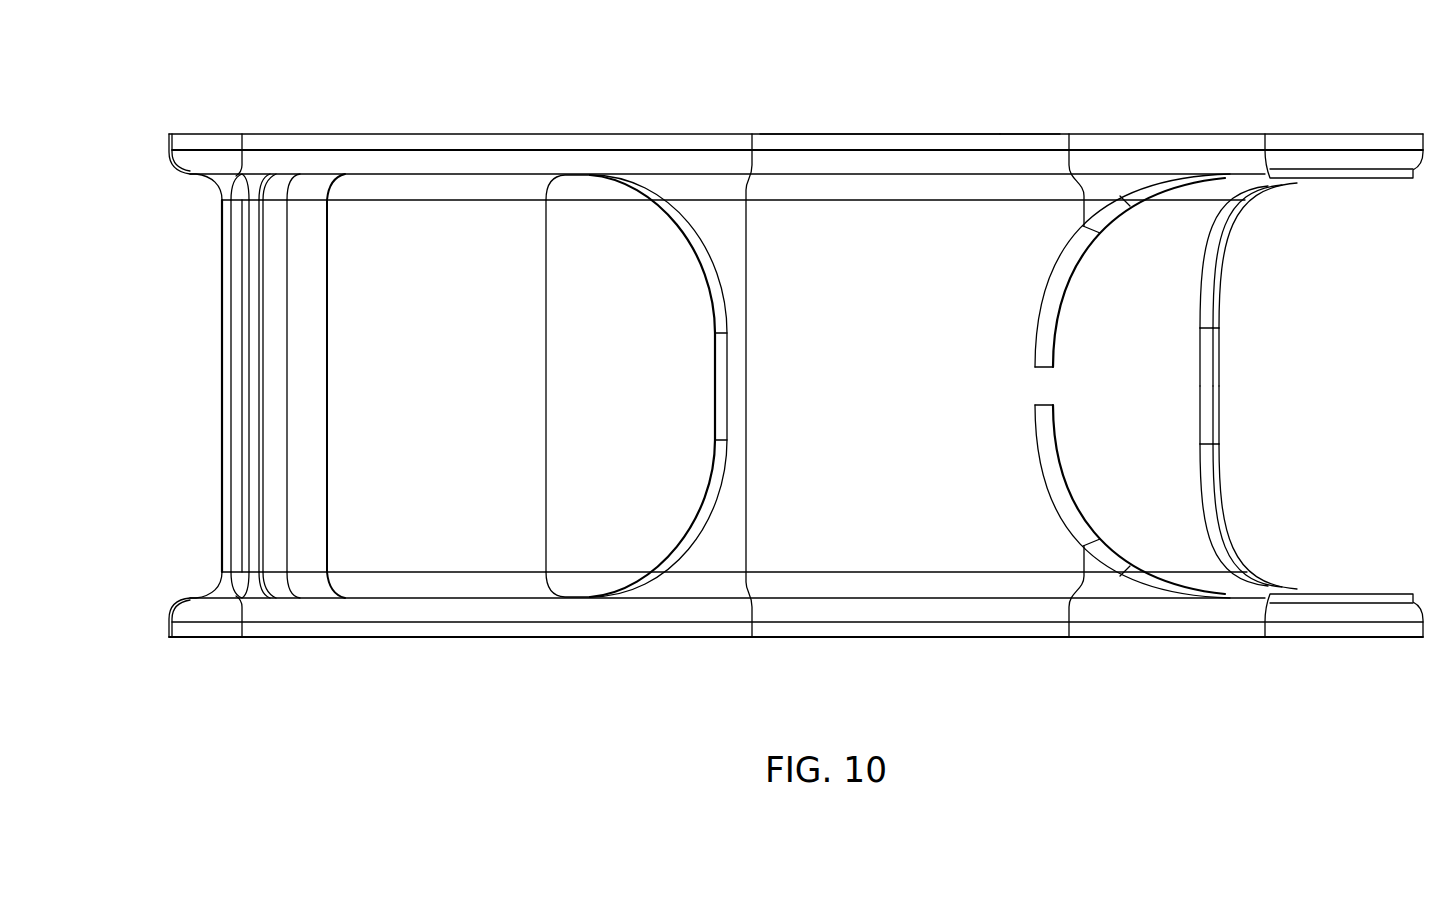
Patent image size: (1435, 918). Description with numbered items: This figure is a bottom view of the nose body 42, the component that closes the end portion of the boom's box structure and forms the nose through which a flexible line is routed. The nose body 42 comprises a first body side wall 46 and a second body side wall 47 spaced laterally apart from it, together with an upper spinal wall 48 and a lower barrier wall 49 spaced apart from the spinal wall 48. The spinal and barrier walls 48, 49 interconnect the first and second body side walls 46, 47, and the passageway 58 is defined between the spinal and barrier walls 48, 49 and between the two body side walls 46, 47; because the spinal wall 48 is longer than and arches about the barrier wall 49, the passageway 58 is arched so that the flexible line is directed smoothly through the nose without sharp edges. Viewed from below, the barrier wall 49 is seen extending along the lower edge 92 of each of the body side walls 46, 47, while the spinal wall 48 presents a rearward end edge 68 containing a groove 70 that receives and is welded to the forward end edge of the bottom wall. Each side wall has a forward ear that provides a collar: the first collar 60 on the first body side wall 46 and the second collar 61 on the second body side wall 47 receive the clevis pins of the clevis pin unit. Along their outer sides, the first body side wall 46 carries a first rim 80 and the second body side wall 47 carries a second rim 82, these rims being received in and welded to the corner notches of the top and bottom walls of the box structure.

The nose body 42 is at (250, 90).
The first body side wall 46 is at (937, 143).
The second body side wall 47 is at (876, 627).
The spinal wall 48 is at (370, 389).
The barrier wall 49 is at (827, 418).
The passageway 58 is at (674, 358).
The first collar 60 is at (1396, 182).
The second collar 61 is at (1396, 590).
The rearward end edge 68 is at (222, 346).
The groove 70 is at (238, 432).
The first rim 80 is at (1024, 143).
The second rim 82 is at (980, 630).
The lower edge 92 is at (840, 143).